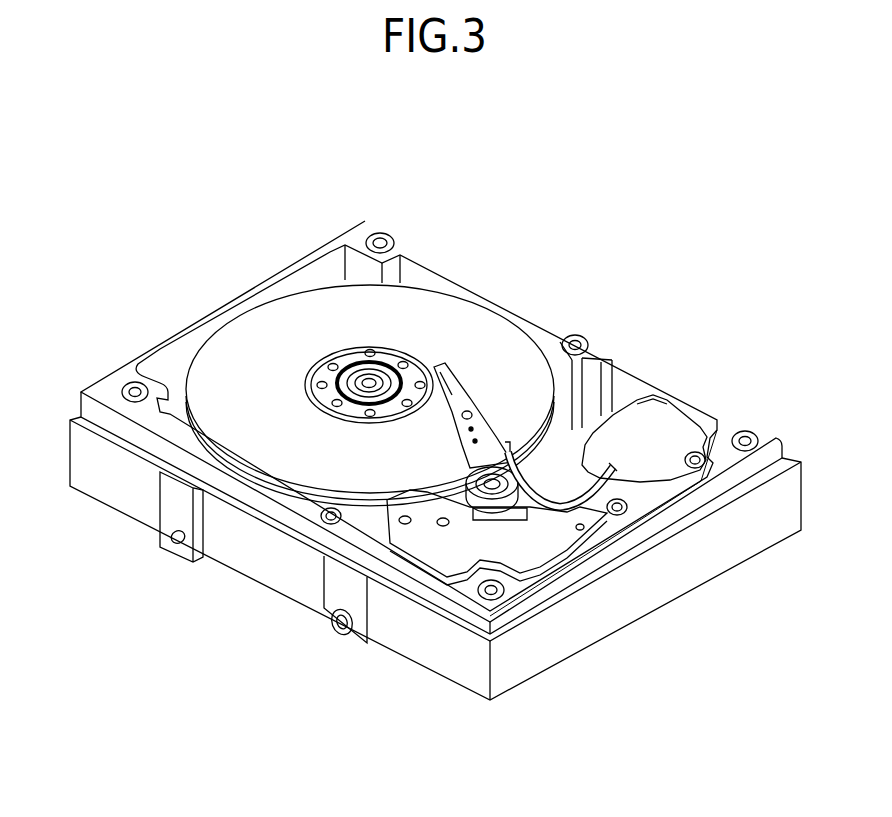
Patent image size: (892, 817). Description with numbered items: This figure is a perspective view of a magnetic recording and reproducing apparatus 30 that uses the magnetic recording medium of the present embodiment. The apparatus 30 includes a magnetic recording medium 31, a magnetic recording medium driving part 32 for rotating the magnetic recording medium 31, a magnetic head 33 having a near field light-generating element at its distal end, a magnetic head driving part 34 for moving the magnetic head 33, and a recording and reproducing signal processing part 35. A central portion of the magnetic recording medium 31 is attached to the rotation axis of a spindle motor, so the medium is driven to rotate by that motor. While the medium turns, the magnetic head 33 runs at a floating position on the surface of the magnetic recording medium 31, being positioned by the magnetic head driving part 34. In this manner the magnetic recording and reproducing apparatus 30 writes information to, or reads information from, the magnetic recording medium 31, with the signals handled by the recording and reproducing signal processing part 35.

The magnetic recording and reproducing apparatus 30 is at (567, 310).
The magnetic recording medium 31 is at (370, 380).
The magnetic recording medium driving part 32 is at (414, 303).
The magnetic head 33 is at (438, 372).
The magnetic head driving part 34 is at (528, 540).
The recording and reproducing signal processing part 35 is at (662, 433).